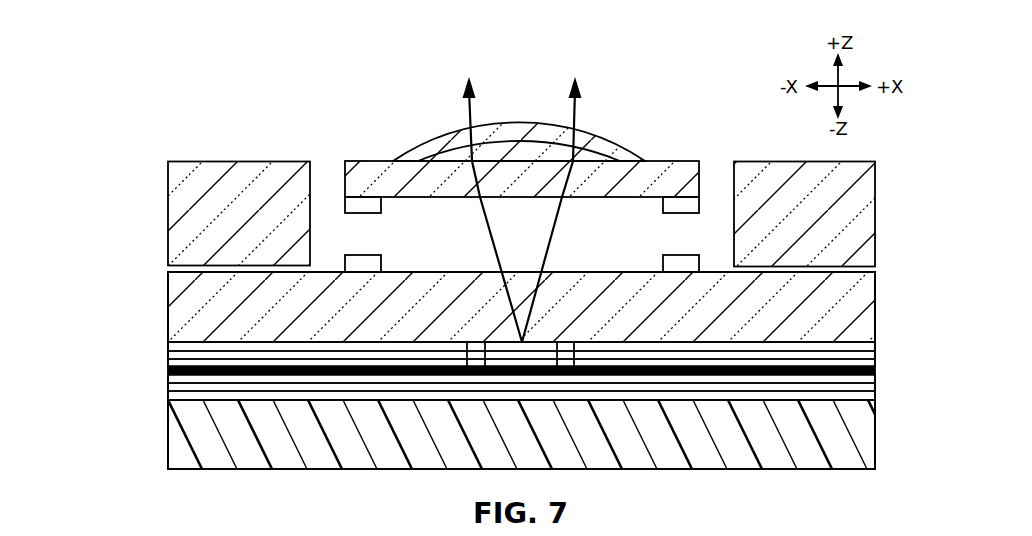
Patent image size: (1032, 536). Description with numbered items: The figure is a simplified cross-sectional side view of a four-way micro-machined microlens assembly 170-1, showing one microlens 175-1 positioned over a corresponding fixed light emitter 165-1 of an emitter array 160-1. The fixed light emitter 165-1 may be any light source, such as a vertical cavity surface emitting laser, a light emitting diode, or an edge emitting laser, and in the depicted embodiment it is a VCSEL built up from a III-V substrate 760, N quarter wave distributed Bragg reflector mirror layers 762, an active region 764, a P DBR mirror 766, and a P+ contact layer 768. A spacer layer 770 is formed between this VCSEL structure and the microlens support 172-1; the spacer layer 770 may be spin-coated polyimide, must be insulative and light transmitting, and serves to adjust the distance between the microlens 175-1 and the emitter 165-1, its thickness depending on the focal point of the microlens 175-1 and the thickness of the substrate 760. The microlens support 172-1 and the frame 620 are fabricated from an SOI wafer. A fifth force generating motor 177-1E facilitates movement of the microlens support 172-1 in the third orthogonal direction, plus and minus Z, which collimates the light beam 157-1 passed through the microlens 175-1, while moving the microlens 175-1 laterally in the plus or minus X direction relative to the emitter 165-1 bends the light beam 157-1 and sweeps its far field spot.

The four-way micro-machined microlens assembly 170-1 is at (143, 160).
The emitter array 160-1 is at (97, 280).
The frame 620 is at (258, 161).
The microlens support 172-1 is at (345, 180).
The microlens 175-1 is at (607, 140).
The fifth force generating motor 177-1E is at (363, 213).
The light beam 157-1 is at (573, 108).
The fixed light emitter 165-1 is at (560, 318).
The spacer layer 770 is at (168, 308).
The P+ contact layer 768 is at (168, 345).
The P DBR mirror 766 is at (168, 356).
The active region 764 is at (168, 371).
The N quarter wave distributed Bragg reflector mirror layers 762 is at (168, 389).
The III-V substrate 760 is at (168, 440).